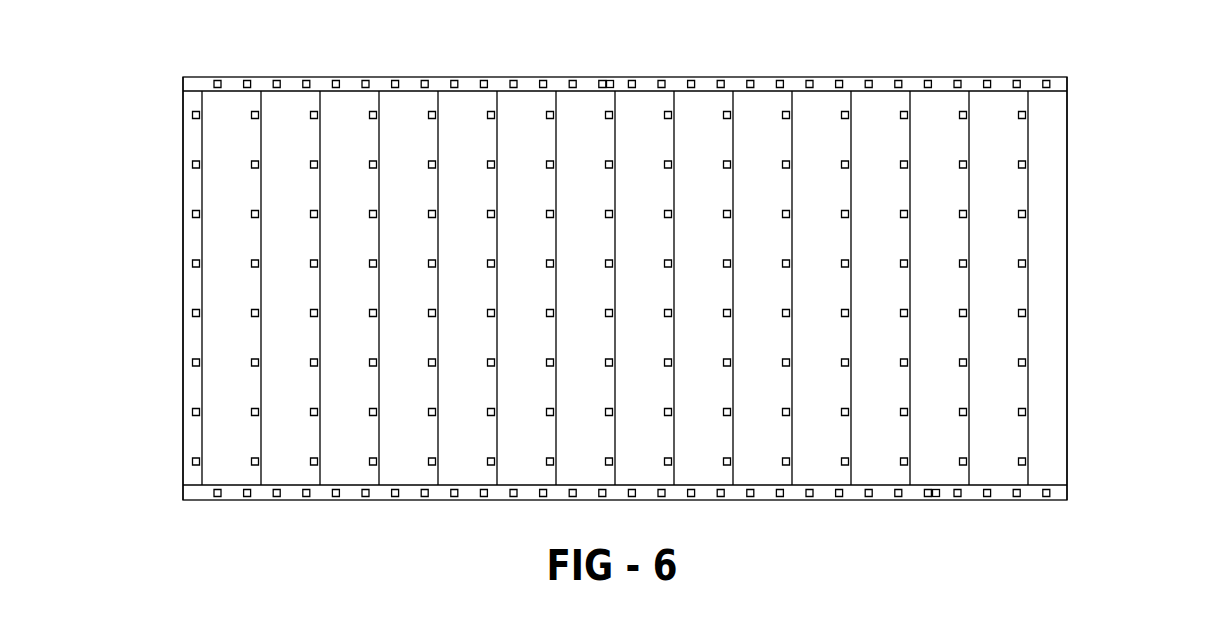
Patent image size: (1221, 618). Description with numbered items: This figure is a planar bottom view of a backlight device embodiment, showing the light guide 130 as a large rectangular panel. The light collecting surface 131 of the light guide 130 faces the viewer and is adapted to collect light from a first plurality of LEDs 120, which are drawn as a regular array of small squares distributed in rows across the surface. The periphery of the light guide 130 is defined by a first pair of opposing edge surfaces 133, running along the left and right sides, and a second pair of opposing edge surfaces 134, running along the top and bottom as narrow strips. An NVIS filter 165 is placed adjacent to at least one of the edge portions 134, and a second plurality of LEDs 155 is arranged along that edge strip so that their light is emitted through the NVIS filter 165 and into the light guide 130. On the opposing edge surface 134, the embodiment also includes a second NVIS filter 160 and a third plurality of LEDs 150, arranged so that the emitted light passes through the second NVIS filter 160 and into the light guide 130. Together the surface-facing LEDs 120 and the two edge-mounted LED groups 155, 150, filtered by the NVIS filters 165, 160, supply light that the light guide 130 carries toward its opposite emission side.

The light guide 130 is at (1067, 145).
The light collecting surface 131 is at (1003, 340).
The first pair of opposing edge surfaces 133 is at (1067, 285).
The second pair of opposing edge surfaces 134 is at (262, 77).
The first plurality of LEDs 120 is at (967, 214).
The third plurality of LEDs 150 is at (752, 497).
The second plurality of LEDs 155 is at (457, 84).
The second NVIS filter 160 is at (933, 497).
The NVIS filter 165 is at (607, 84).